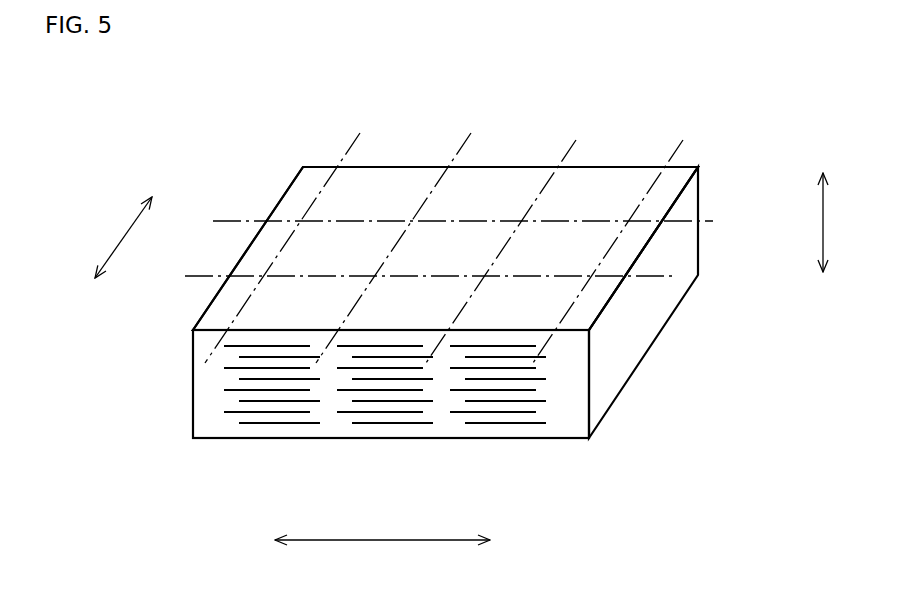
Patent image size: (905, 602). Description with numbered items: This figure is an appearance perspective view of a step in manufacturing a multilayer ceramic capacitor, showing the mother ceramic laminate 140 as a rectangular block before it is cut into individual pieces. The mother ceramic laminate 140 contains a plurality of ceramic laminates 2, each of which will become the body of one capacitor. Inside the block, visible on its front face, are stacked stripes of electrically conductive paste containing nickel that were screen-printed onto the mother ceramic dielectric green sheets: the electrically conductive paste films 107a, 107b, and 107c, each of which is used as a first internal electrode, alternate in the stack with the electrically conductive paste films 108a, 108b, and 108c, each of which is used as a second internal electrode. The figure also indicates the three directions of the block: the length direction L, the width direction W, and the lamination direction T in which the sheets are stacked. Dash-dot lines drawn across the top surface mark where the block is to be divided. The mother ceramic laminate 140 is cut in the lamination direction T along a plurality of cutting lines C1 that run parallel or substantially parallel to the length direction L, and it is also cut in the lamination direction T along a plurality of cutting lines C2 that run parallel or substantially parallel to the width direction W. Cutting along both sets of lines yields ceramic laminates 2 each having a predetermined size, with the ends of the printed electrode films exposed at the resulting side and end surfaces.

The mother ceramic laminate 140 is at (290, 187).
The ceramic laminate 2 is at (337, 206).
The electrically conductive paste film 107a is at (224, 346).
The electrically conductive paste film 107b is at (337, 346).
The electrically conductive paste film 107c is at (450, 346).
The electrically conductive paste film 108a is at (273, 357).
The electrically conductive paste film 108b is at (397, 357).
The electrically conductive paste film 108c is at (540, 357).
The cutting line C1 is at (706, 222).
The cutting line C2 is at (358, 140).
The length direction L is at (382, 559).
The width direction W is at (122, 237).
The lamination direction T is at (837, 222).